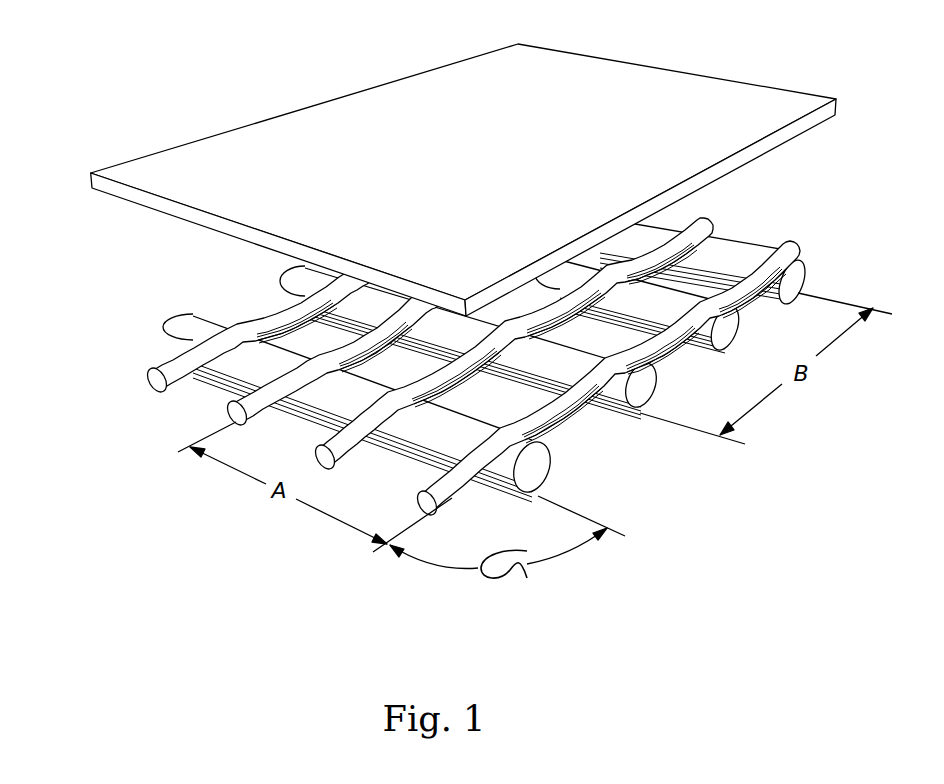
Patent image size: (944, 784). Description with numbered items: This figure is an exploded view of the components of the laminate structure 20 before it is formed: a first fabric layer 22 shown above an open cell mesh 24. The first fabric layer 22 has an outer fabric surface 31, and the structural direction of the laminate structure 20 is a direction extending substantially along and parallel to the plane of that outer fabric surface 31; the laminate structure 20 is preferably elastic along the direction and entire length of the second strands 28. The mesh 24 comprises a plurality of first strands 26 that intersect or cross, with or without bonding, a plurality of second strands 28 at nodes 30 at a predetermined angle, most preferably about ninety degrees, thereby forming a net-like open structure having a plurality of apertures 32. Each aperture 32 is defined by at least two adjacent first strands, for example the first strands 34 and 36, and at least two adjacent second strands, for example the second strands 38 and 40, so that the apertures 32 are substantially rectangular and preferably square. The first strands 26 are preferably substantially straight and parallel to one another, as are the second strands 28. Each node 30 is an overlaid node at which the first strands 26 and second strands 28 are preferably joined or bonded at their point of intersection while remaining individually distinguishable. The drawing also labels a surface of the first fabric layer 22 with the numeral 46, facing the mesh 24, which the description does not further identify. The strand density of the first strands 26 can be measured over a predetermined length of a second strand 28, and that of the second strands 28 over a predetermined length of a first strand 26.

The laminate structure 20 is at (335, 80).
The first fabric layer 22 is at (690, 100).
The open cell mesh 24 is at (749, 220).
The first strands 26 is at (557, 432).
The second strands 28 is at (633, 414).
The nodes 30 is at (243, 317).
The outer fabric surface 31 is at (590, 80).
The apertures 32 is at (320, 337).
The first strand 34 is at (158, 368).
The first strand 36 is at (237, 398).
The second strand 38 is at (165, 336).
The second strand 40 is at (277, 265).
The lower surface of plate 46 is at (118, 197).